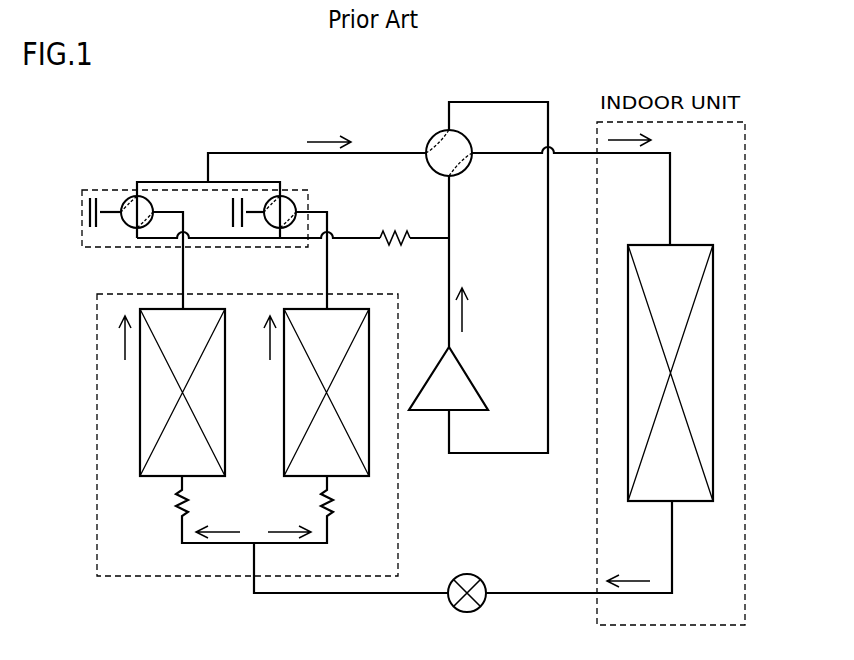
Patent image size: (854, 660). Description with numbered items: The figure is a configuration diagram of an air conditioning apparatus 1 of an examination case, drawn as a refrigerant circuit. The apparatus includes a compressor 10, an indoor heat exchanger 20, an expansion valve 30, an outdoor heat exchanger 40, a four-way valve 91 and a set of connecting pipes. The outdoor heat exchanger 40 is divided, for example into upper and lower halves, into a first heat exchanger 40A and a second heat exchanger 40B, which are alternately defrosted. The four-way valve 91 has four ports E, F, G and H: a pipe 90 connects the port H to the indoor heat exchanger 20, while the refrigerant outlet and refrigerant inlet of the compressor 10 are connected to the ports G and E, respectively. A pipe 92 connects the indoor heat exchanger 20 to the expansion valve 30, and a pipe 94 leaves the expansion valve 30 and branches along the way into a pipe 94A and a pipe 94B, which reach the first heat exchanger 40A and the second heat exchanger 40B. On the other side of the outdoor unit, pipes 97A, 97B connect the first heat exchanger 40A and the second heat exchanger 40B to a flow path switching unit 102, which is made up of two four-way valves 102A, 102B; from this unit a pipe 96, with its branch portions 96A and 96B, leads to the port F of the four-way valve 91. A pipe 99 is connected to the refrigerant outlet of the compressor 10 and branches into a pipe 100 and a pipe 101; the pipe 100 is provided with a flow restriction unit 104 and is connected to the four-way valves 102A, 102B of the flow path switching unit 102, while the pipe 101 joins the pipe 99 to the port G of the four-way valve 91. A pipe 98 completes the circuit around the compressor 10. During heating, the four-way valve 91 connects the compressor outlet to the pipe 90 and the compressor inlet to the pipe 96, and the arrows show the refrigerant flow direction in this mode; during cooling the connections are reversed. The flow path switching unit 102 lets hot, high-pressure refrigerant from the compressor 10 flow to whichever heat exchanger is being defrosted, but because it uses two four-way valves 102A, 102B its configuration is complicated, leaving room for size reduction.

The air conditioning apparatus 1 is at (144, 81).
The compressor 10 is at (470, 378).
The indoor heat exchanger 20 is at (686, 244).
The expansion valve 30 is at (470, 610).
The outdoor heat exchanger 40 is at (130, 577).
The first heat exchanger 40A is at (152, 478).
The second heat exchanger 40B is at (360, 478).
The pipe 90 is at (522, 156).
The four-way valve 91 is at (433, 140).
The pipe 92 is at (548, 590).
The pipe 94 is at (383, 597).
The pipe 94A is at (207, 545).
The pipe 94B is at (281, 545).
The pipe 96 is at (238, 152).
The bypass branch pipe 96A is at (160, 181).
The bypass connecting pipe 96B is at (260, 181).
The pipe 97A is at (182, 273).
The pipe 97B is at (327, 273).
The pipe 98 is at (500, 101).
The pipe 99 is at (452, 272).
The pipe 100 is at (357, 231).
The pipe 101 is at (452, 216).
The flow path switching unit 102 is at (100, 188).
The four-way valve 102A is at (125, 224).
The four-way valve 102B is at (268, 224).
The flow restriction unit 104 is at (390, 247).
The port E is at (449, 134).
The port F is at (428, 152).
The port G is at (449, 176).
The port H is at (472, 152).